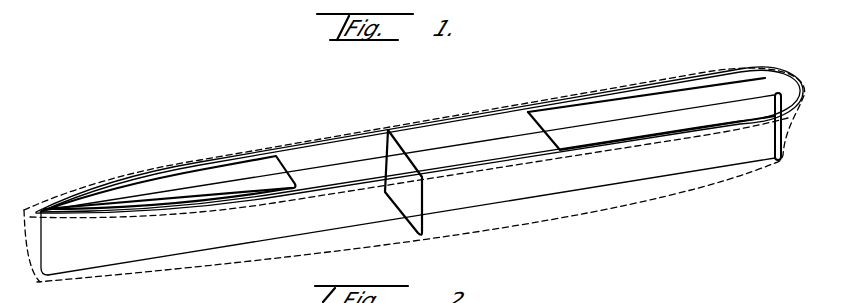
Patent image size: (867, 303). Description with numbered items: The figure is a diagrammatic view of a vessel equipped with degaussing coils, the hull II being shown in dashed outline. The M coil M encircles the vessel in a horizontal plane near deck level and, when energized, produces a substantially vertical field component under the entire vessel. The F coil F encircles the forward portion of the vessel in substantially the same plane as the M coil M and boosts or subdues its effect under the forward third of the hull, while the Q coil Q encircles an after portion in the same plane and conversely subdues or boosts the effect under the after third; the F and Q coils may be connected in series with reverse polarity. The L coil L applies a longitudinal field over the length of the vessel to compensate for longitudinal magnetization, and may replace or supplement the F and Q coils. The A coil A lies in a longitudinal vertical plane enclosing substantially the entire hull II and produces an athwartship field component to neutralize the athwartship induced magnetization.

The M coil M is at (470, 118).
The A coil A is at (46, 266).
The hull II is at (668, 200).
The F coil F is at (247, 160).
The L coil L is at (397, 140).
The Q coil Q is at (642, 90).